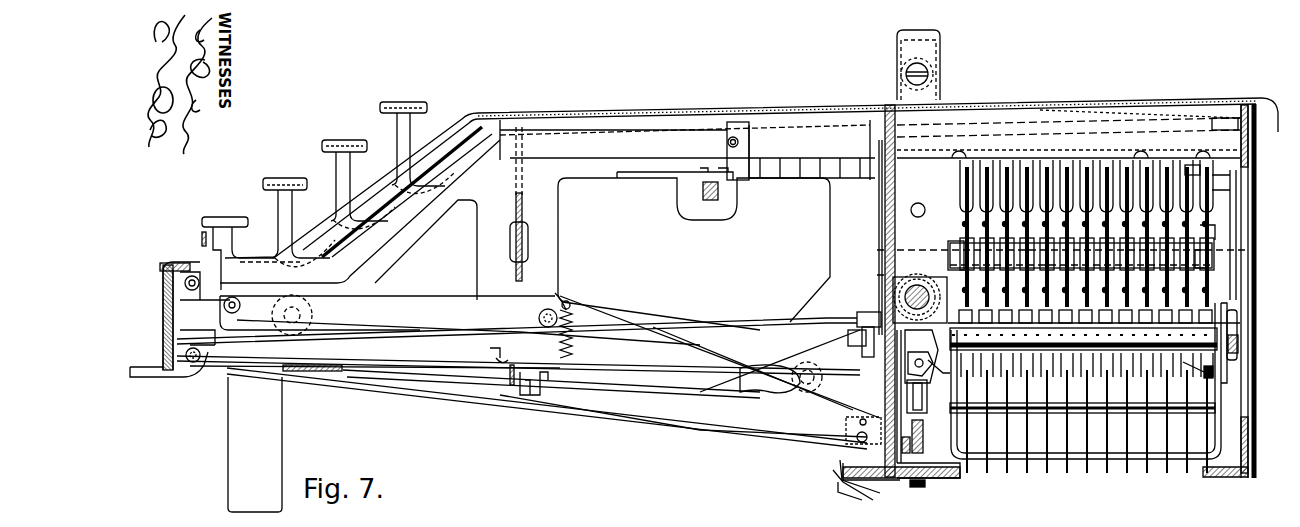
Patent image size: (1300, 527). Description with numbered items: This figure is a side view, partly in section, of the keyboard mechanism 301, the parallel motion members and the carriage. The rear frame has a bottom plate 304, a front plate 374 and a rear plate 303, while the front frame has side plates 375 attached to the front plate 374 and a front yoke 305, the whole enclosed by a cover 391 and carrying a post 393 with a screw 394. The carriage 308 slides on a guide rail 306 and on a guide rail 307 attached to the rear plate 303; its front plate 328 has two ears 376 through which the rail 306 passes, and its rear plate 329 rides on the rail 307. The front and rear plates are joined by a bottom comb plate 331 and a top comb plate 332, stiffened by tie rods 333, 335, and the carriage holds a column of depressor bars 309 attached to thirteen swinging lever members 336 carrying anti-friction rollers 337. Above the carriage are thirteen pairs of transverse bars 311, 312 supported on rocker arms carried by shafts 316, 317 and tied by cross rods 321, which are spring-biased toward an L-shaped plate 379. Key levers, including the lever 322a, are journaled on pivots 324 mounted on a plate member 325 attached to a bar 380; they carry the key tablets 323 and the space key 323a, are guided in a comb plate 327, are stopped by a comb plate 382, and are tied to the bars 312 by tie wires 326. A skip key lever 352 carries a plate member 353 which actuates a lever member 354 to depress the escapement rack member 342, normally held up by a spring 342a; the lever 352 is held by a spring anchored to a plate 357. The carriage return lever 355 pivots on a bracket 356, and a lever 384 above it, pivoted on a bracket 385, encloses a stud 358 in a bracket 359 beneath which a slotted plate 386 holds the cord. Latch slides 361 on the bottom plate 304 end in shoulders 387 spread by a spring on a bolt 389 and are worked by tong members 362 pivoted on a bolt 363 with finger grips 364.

The adding machine 301 is at (667, 490).
The rear plate 303 is at (1235, 112).
The bottom plate 304 is at (940, 482).
The front yoke 305 is at (163, 282).
The guide rail 306 is at (885, 268).
The guide rail 307 is at (1228, 327).
The carriage 308 is at (1205, 517).
The depressor bars 309 is at (1028, 480).
The transverse bars 311 is at (1173, 303).
The transverse bars 312 is at (1196, 246).
The shaft 316 is at (915, 262).
The shaft 317 is at (1240, 343).
The cross rods 321 is at (1222, 190).
The key lever 322a is at (676, 130).
The key tablets 323 is at (283, 178).
The space key 323a is at (221, 216).
The pivots 324 is at (757, 128).
The plate member 325 is at (773, 180).
The tie wires 326 is at (1200, 172).
The comb plate 327 is at (524, 205).
The front plate of carriage 328 is at (915, 443).
The rear plate of carriage 329 is at (1220, 393).
The bottom comb plate 331 is at (1222, 457).
The top comb plate 332 is at (1207, 373).
The tie rod 333 is at (1198, 418).
The tie rod 335 is at (1193, 340).
The auxiliary swinging lever members 336 is at (926, 212).
The anti-friction rollers 337 is at (1216, 258).
The escapement rack member 342 is at (910, 488).
The spring 342a is at (880, 497).
The lever member 352 is at (414, 292).
The plate member 353 is at (735, 372).
The lever member 354 is at (832, 406).
The carriage return lever 355 is at (165, 378).
The bracket 356 is at (762, 388).
The plate 357 is at (526, 395).
The stud 358 is at (866, 312).
The bracket 359 is at (858, 326).
The sliding members 361 is at (866, 495).
The tong members 362 is at (602, 408).
The bolt 363 is at (510, 363).
The finger grips 364 is at (282, 446).
The front plate 374 is at (884, 228).
The side plates 375 is at (563, 270).
The ears 376 is at (300, 372).
The L-shaped plate 379 is at (975, 160).
The bar 380 is at (714, 202).
The comb plate 382 is at (664, 176).
The lever 384 is at (772, 320).
The bracket 385 is at (188, 260).
The slotted plate 386 is at (822, 346).
The shoulders 387 is at (845, 495).
The bolt 389 is at (850, 450).
The casing top cover 391 is at (518, 114).
The post 393 is at (930, 47).
The screw 394 is at (942, 81).